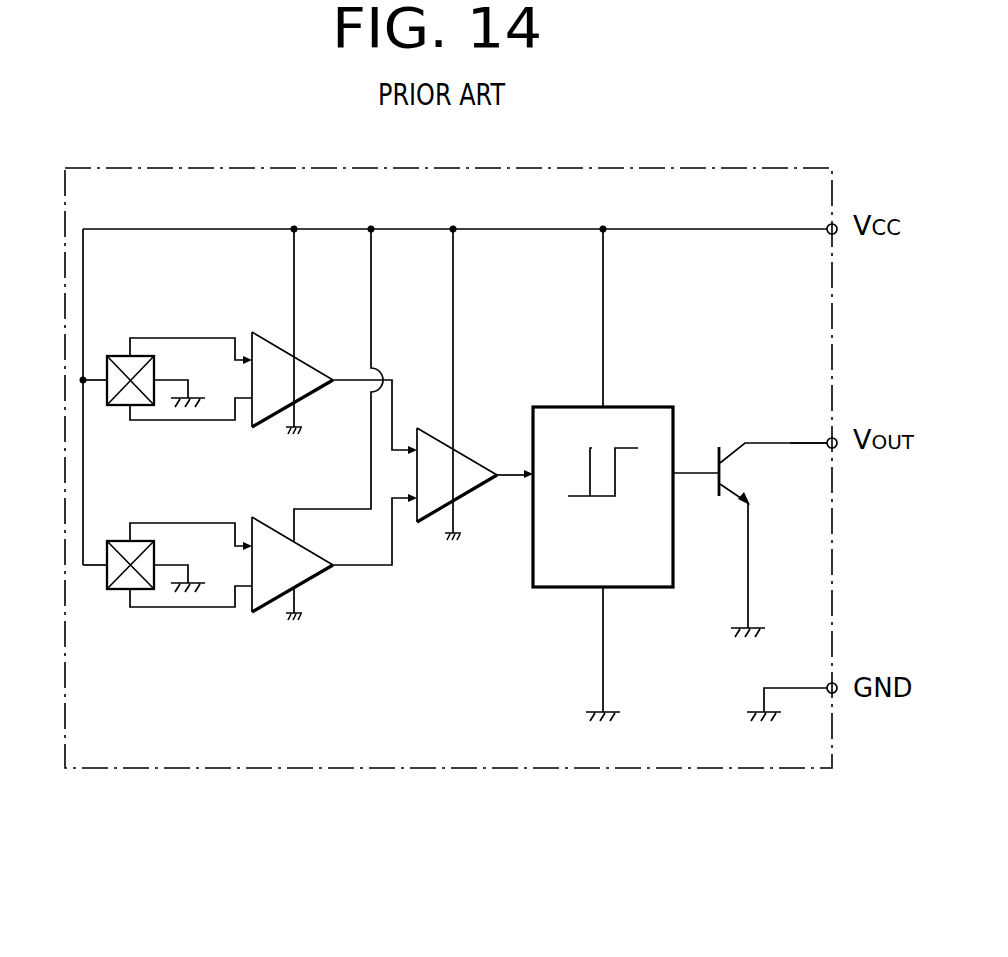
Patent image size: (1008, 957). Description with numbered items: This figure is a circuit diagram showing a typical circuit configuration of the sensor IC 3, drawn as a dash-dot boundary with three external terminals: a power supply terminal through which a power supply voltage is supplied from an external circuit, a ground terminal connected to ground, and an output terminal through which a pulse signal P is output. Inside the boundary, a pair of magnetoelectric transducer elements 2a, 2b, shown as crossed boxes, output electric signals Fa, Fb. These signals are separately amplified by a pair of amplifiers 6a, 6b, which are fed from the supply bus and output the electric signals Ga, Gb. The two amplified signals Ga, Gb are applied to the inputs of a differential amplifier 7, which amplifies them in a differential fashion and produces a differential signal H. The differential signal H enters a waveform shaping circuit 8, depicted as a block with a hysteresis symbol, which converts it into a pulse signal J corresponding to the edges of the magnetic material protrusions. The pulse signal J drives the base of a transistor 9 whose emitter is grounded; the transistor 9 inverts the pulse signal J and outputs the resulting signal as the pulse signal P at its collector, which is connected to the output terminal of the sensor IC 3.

The magnetoelectric transducer element 2a is at (113, 356).
The magnetoelectric transducer element 2b is at (113, 589).
The sensor IC 3 is at (513, 770).
The amplifier 6a is at (256, 332).
The amplifier 6b is at (258, 613).
The differential amplifier 7 is at (494, 466).
The waveform shaping circuit 8 is at (640, 407).
The transistor 9 is at (743, 451).
The electric signal Fa is at (177, 338).
The electric signal Fb is at (172, 523).
The electric signal Ga is at (386, 378).
The electric signal Gb is at (371, 567).
The differential signal H is at (506, 477).
The pulse signal J is at (693, 477).
The pulse signal P is at (790, 441).